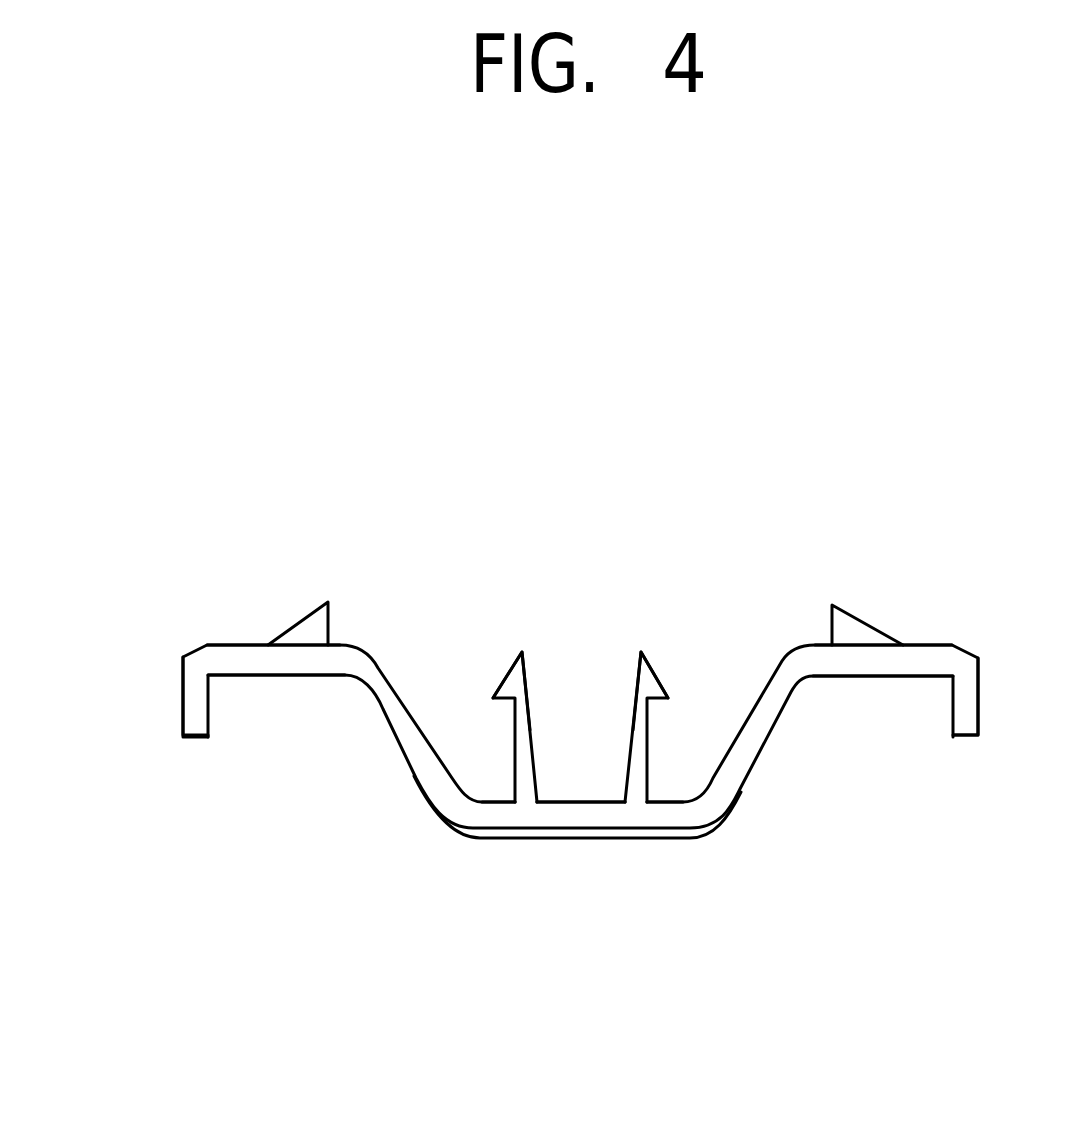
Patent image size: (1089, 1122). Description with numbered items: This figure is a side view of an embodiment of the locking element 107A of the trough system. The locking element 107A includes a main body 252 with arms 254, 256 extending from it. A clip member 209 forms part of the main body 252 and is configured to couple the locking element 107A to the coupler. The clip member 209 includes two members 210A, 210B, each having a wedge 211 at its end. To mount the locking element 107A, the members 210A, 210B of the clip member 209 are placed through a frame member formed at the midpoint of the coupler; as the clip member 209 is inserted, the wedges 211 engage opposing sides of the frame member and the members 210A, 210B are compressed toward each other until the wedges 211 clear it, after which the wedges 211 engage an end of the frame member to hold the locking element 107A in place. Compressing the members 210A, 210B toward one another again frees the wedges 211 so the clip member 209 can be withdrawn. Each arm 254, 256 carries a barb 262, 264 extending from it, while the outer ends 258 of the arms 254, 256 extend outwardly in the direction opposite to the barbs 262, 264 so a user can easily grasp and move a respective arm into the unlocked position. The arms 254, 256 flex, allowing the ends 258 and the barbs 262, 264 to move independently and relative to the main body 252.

The locking element 107A is at (833, 525).
The clip member 209 is at (660, 575).
The member 210A is at (534, 736).
The member 210B is at (640, 765).
The wedges 211 is at (500, 673).
The main body 252 is at (580, 818).
The arm 254 is at (282, 668).
The arm 256 is at (880, 670).
The outer ends 258 is at (190, 730).
The barb 262 is at (287, 630).
The barb 264 is at (857, 630).